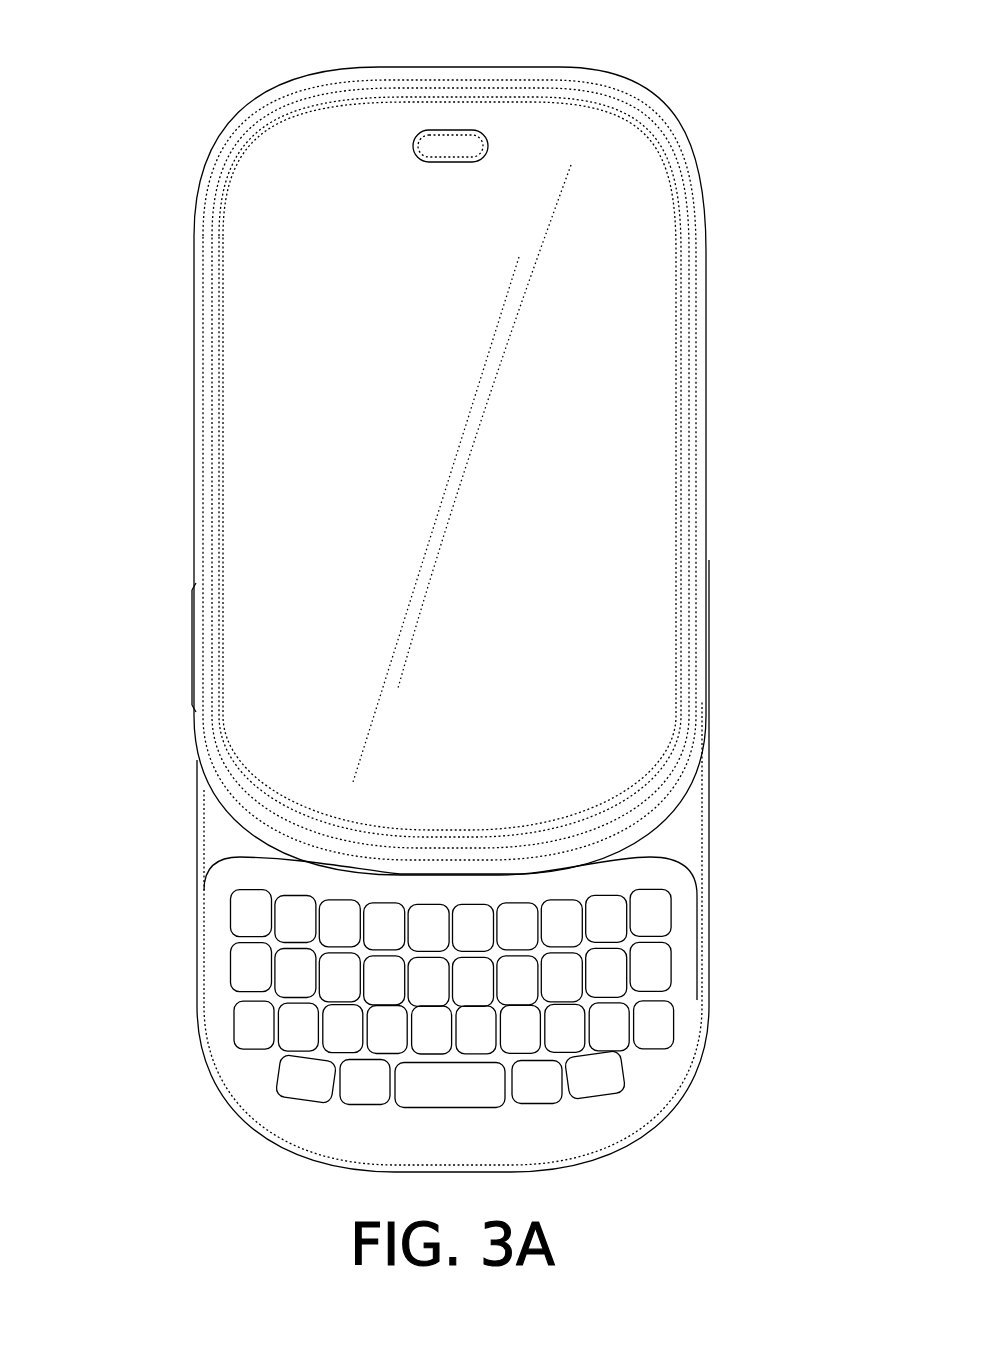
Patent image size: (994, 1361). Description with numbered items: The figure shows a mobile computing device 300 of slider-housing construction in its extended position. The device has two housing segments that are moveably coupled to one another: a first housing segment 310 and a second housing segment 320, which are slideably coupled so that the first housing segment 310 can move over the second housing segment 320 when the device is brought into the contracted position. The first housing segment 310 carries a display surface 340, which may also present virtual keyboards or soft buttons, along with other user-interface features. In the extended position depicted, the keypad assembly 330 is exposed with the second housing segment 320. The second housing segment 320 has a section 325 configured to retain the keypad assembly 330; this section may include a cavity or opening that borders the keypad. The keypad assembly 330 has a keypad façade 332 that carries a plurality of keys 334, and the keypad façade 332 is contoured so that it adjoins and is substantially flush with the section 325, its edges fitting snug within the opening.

The mobile computing device 300 is at (450, 605).
The first housing segment 310 is at (516, 470).
The second housing segment 320 is at (526, 471).
The section 325 is at (192, 1043).
The keypad assembly 330 is at (461, 1029).
The keypad façade 332 is at (287, 1136).
The keys 334 is at (232, 958).
The display surface 340 is at (616, 520).